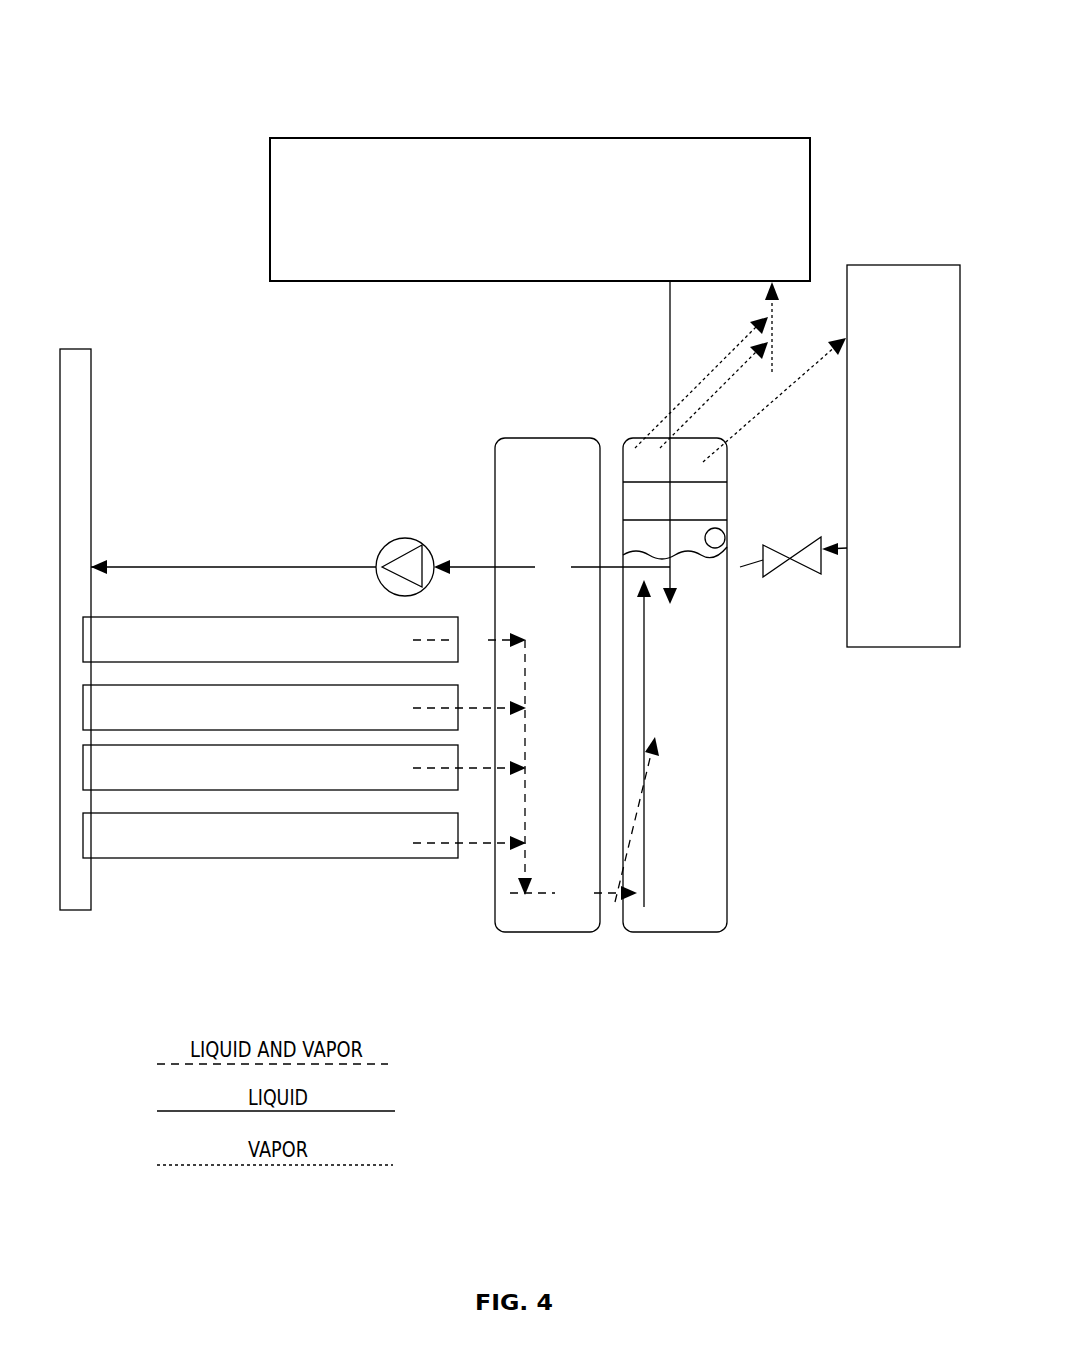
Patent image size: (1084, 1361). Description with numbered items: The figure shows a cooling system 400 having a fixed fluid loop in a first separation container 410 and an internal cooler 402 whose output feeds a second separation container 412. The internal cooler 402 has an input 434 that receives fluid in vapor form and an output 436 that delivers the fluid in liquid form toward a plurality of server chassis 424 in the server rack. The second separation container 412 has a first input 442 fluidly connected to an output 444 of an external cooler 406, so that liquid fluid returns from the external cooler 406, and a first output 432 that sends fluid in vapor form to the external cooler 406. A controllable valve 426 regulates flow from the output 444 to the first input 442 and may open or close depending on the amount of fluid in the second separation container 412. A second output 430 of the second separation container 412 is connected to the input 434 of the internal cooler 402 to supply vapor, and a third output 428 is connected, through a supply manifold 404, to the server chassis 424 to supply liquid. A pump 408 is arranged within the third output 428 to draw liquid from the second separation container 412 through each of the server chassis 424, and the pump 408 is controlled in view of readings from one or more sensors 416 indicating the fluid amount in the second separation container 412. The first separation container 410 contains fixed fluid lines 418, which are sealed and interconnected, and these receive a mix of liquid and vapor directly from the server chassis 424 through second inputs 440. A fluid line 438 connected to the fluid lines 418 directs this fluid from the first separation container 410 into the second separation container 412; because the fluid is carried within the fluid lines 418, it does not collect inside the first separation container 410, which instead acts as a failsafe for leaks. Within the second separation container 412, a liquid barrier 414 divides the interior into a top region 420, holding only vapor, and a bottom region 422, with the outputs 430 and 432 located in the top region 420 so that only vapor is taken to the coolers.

The cooling system 400 is at (822, 68).
The internal cooler 402 is at (643, 224).
The supply manifold 404 is at (93, 331).
The external cooler 406 is at (921, 501).
The pump 408 is at (415, 543).
The first separation container 410 is at (565, 977).
The second separation container 412 is at (694, 977).
The liquid barrier 414 is at (692, 515).
The sensors 416 is at (728, 540).
The fluid lines 418 is at (527, 832).
The top region 420 is at (657, 462).
The bottom region 422 is at (712, 752).
The server chassis 424 is at (328, 924).
The controllable valve 426 is at (807, 619).
The third output 428 is at (571, 582).
The second output 430 is at (724, 397).
The first output 432 is at (794, 414).
The input 434 is at (766, 315).
The output 436 is at (668, 431).
The fluid line 438 is at (591, 909).
The second one or more inputs 440 is at (487, 658).
The first input 442 is at (740, 586).
The output 444 is at (861, 543).